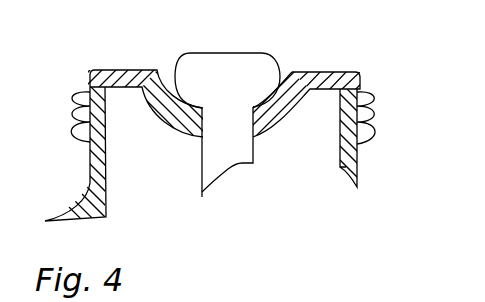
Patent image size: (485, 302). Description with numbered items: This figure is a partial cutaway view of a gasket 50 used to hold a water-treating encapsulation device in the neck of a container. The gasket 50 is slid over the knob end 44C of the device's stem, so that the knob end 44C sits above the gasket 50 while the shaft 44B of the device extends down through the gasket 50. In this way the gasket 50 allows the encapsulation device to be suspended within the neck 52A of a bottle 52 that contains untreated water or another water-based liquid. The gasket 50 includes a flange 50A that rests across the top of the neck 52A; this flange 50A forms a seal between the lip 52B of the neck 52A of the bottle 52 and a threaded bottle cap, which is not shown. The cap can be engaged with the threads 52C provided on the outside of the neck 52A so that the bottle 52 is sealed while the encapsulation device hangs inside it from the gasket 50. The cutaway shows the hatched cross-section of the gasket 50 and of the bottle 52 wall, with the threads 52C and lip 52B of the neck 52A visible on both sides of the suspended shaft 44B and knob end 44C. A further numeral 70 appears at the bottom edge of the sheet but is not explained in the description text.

The bushing 50 is at (359, 74).
The bushing flange 50A is at (128, 72).
The bushing wall 52 is at (346, 147).
The bushing wall lower portion 52A is at (88, 173).
The threads 52B is at (360, 90).
The threads 52C is at (88, 97).
The stem 44B is at (215, 167).
The head 44C is at (233, 66).
The component 70 is at (218, 296).